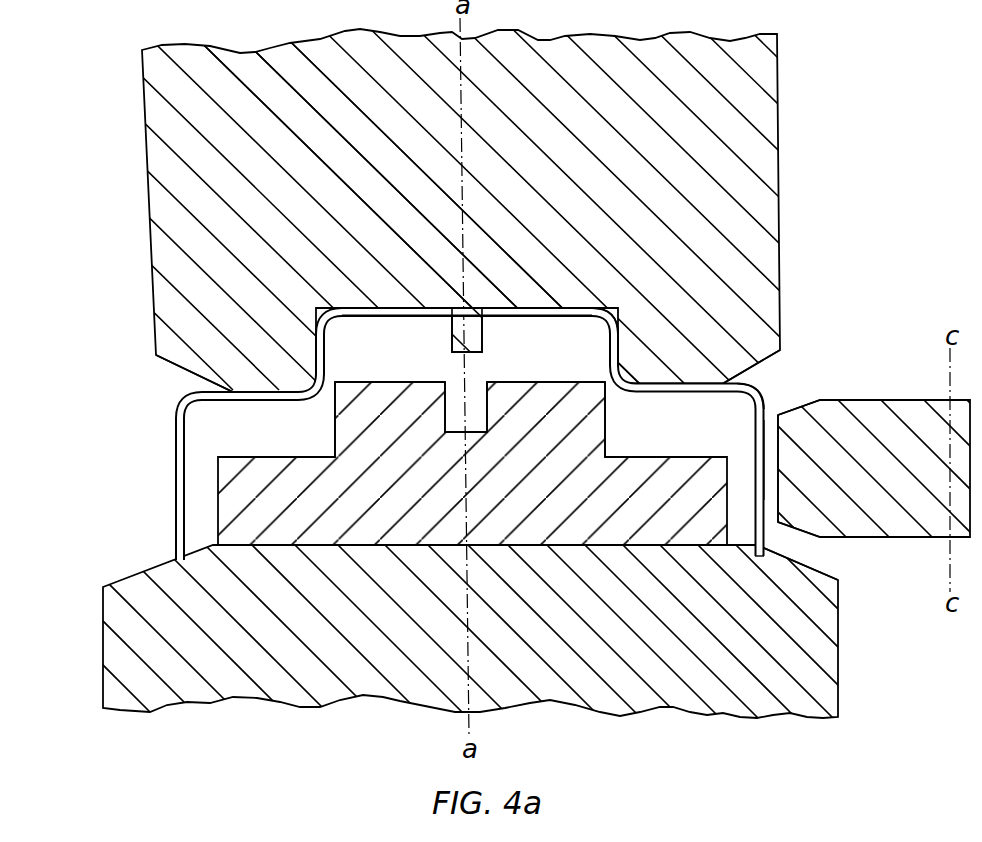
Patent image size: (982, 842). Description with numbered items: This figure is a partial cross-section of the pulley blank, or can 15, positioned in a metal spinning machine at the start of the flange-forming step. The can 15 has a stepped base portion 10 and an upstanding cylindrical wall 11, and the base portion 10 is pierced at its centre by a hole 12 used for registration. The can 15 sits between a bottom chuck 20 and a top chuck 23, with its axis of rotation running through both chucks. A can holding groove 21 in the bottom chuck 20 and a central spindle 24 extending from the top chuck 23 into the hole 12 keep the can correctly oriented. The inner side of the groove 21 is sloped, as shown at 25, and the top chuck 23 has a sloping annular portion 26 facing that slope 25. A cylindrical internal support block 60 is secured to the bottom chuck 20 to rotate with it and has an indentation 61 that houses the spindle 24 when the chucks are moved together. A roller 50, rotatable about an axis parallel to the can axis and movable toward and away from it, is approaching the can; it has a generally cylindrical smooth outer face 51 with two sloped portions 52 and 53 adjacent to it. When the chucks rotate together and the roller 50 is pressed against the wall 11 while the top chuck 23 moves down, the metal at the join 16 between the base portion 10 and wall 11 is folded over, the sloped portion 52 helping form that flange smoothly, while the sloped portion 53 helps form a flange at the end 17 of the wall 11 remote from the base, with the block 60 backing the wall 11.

The base portion 10 is at (595, 308).
The cylindrical wall 11 is at (753, 433).
The hole 12 is at (490, 308).
The can 15 is at (170, 440).
The join between base and wall 16 is at (763, 400).
The end of can wall 17 is at (765, 542).
The bottom chuck 20 is at (594, 659).
The can holding groove 21 is at (760, 577).
The top chuck 23 is at (630, 176).
The central spindle 24 is at (460, 322).
The slope 25 is at (200, 487).
The sloping annular portion 26 is at (178, 365).
The roller 50 is at (814, 470).
The cylindrical outer face 51 is at (778, 463).
The sloped portion 52 is at (810, 400).
The sloped portion 53 is at (813, 537).
The internal support block 60 is at (406, 491).
The indentation 61 is at (482, 417).